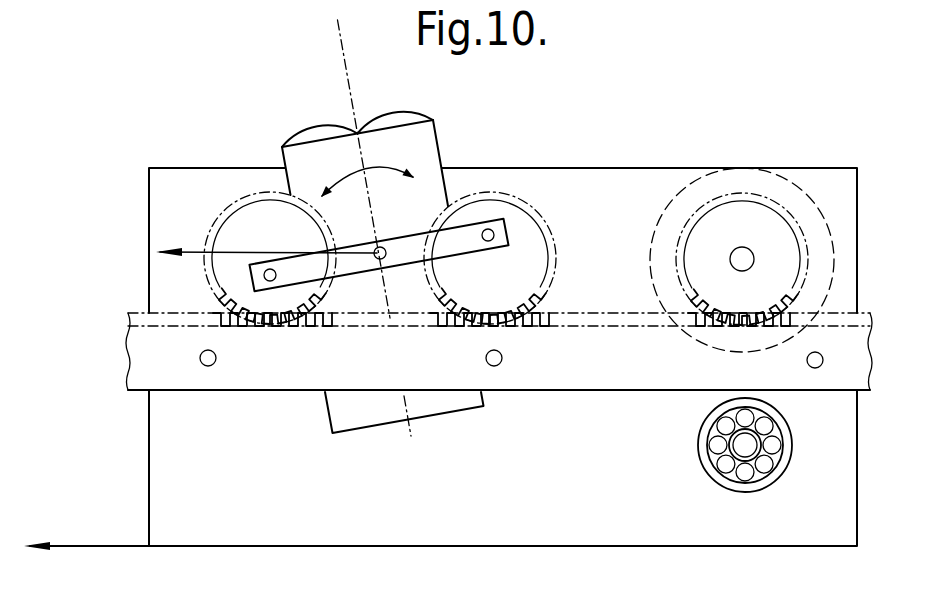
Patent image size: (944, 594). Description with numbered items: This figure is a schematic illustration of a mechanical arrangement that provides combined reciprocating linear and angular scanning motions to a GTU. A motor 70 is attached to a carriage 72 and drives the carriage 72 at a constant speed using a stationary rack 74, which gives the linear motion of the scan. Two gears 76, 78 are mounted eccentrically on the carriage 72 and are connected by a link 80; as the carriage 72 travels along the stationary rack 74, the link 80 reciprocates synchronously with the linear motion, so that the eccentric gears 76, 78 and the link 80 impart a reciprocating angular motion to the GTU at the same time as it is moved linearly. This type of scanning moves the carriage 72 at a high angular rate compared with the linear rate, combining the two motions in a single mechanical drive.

The motor 70 is at (725, 167).
The carriage 72 is at (818, 170).
The stationary rack 74 is at (870, 317).
The gear 76 is at (238, 196).
The gear 78 is at (497, 196).
The link 80 is at (361, 272).
The element GTU is at (329, 113).